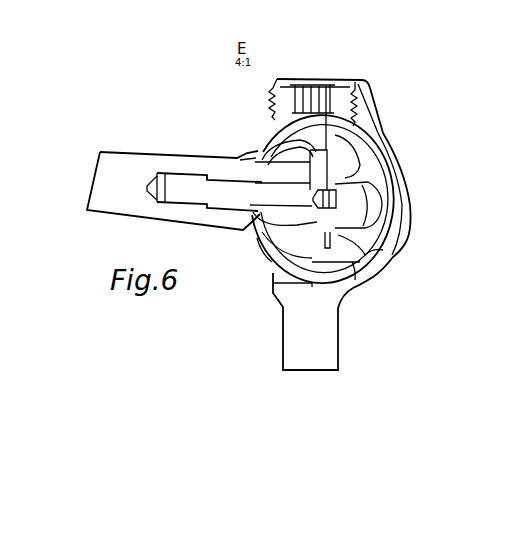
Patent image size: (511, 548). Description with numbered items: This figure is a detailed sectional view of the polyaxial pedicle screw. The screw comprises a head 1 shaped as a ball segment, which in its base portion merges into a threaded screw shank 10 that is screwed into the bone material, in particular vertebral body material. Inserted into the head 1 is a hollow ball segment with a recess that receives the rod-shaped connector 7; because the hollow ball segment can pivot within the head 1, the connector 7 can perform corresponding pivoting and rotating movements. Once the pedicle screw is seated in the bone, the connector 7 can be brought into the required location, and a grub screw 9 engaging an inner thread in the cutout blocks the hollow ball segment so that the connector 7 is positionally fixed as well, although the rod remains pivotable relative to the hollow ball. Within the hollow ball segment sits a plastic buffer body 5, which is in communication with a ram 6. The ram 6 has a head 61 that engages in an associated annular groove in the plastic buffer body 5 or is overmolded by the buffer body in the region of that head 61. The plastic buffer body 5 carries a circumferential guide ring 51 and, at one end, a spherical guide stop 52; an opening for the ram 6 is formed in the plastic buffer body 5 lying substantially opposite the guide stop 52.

The head 1 is at (405, 152).
The plastic buffer body 5 is at (380, 205).
The ram 6 is at (184, 157).
The rod-shaped connector 7 is at (120, 156).
The grub screw 9 is at (347, 82).
The threaded screw shank 10 is at (338, 355).
The circumferential guide ring 51 is at (257, 238).
The spherical guide stop 52 is at (383, 250).
The head of the ram 61 is at (323, 79).